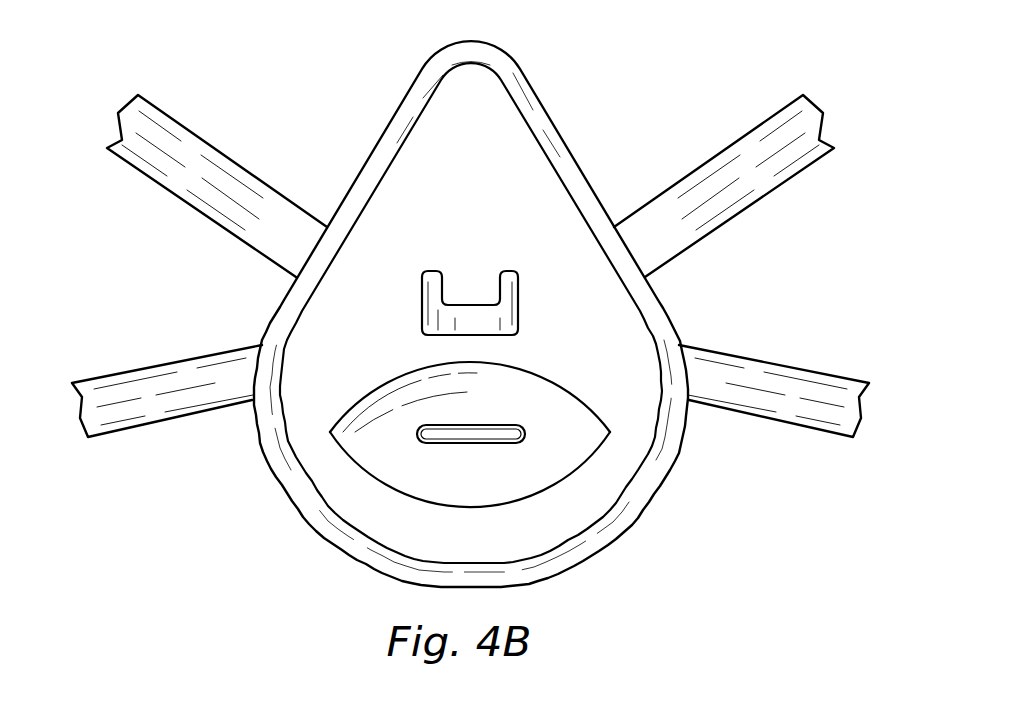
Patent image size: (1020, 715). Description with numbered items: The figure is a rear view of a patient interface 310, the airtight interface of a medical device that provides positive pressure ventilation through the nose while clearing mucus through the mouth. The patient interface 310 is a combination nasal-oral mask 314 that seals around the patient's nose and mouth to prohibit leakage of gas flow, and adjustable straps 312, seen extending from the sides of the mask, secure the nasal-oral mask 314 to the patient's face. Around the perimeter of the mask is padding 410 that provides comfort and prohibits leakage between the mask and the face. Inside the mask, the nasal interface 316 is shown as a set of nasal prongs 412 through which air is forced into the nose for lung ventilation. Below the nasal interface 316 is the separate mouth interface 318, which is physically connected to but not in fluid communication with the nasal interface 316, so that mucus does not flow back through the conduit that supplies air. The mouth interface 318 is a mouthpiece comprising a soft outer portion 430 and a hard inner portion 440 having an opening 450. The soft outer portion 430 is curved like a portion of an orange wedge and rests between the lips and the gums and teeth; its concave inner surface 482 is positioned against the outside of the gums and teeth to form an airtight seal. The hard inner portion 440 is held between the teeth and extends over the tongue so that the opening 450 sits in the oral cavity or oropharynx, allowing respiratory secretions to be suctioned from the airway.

The patient interface 310 is at (470, 314).
The adjustable straps 312 is at (167, 123).
The nasal-oral mask 314 is at (483, 532).
The nasal interface 316 is at (485, 261).
The mouth interface 318 is at (594, 478).
The padding 410 is at (427, 71).
The nasal prongs 412 is at (422, 308).
The soft outer portion 430 is at (373, 445).
The hard inner portion 440 is at (437, 445).
The opening 450 is at (468, 437).
The inner surface 482 is at (476, 447).